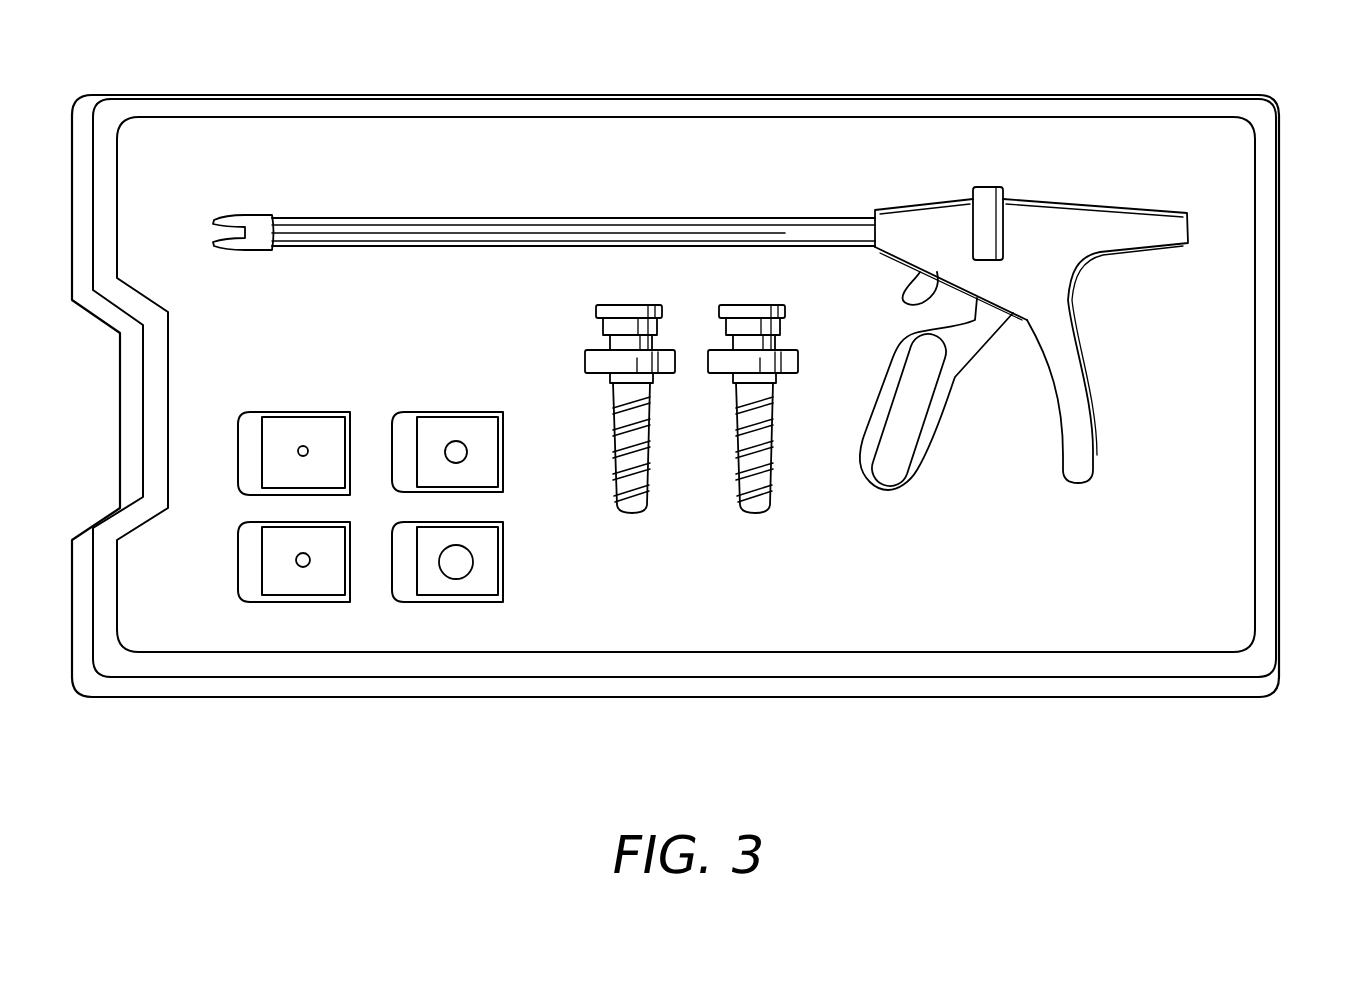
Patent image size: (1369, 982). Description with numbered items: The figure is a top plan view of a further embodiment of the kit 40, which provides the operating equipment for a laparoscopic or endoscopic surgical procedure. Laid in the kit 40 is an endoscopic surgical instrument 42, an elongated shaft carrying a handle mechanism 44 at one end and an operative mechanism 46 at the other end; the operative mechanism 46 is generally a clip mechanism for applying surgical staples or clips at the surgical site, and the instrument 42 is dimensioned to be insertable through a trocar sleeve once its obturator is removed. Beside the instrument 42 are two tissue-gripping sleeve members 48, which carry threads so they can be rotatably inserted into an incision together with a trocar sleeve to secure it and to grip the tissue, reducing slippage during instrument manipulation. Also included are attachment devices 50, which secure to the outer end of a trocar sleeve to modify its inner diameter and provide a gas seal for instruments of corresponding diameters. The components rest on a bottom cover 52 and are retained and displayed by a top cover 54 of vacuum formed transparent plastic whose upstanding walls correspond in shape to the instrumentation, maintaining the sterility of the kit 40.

The kit 40 is at (1290, 229).
The endoscopic surgical instrument 42 is at (720, 222).
The handle mechanism 44 is at (1052, 212).
The operative mechanism 46 is at (247, 215).
The tissue-gripping sleeve members 48 is at (757, 513).
The attachment devices 50 is at (438, 602).
The bottom cover 52 is at (1280, 340).
The top cover 54 is at (1262, 558).